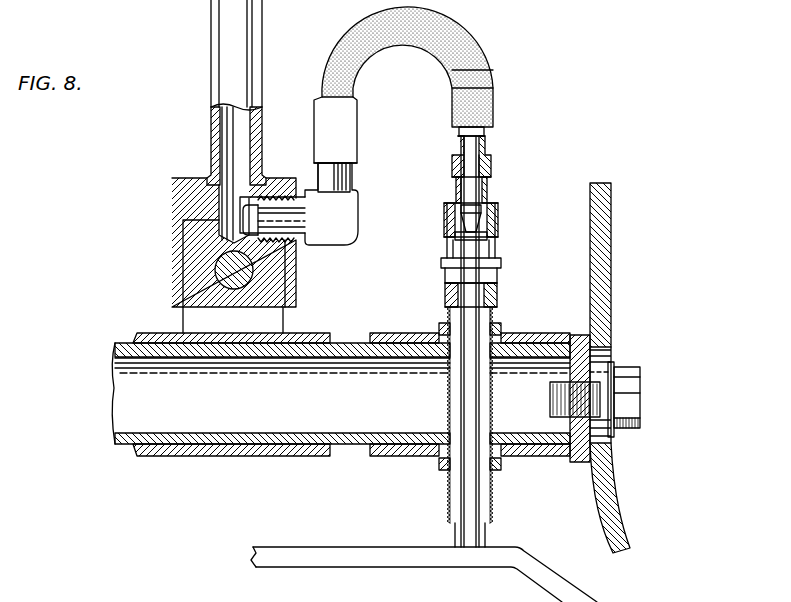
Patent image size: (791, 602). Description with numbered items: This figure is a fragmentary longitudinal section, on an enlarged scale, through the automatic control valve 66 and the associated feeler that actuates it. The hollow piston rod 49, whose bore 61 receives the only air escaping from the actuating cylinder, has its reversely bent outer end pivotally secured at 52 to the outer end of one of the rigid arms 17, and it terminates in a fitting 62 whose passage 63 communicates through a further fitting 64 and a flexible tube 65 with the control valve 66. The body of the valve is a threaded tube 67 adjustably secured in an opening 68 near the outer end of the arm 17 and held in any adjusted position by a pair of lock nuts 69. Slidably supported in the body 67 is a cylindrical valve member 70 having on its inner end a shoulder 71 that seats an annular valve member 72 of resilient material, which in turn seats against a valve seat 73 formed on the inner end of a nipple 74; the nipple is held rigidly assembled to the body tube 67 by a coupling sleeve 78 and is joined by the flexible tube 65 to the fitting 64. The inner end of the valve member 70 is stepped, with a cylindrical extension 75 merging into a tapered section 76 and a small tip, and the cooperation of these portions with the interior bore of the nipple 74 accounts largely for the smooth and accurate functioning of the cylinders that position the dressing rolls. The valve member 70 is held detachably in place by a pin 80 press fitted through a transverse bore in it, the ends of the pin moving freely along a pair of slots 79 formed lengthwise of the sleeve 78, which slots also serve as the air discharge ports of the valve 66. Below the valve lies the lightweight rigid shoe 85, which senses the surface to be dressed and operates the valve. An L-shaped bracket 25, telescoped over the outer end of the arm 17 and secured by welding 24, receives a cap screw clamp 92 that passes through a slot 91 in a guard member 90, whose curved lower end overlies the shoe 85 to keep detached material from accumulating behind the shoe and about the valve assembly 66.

The arm 17 is at (336, 457).
The welding 24 is at (568, 463).
The L-shaped bracket 25 is at (605, 338).
The hollow piston rod 49 is at (215, 33).
The pivotal securement 52 is at (215, 270).
The bore 61 is at (232, 138).
The fitting 62 is at (180, 183).
The passage 63 is at (228, 208).
The fitting 64 is at (330, 234).
The flexible tube 65 is at (472, 18).
The control valve 66 is at (519, 183).
The threaded tube 67 is at (497, 315).
The opening 68 is at (461, 360).
The lock nuts 69 is at (501, 329).
The cylindrical valve member 70 is at (465, 318).
The shoulder 71 is at (488, 212).
The annular valve member 72 is at (462, 236).
The valve seat 73 is at (488, 224).
The nipple 74 is at (455, 169).
The cylindrical extension 75 is at (462, 225).
The tapered section 76 is at (468, 212).
The coupling sleeve 78 is at (446, 295).
The slots 79 is at (446, 270).
The pin 80 is at (500, 263).
The shoe 85 is at (276, 548).
The guard member 90 is at (608, 488).
The slot 91 is at (614, 440).
The cap screw clamp 92 is at (628, 393).